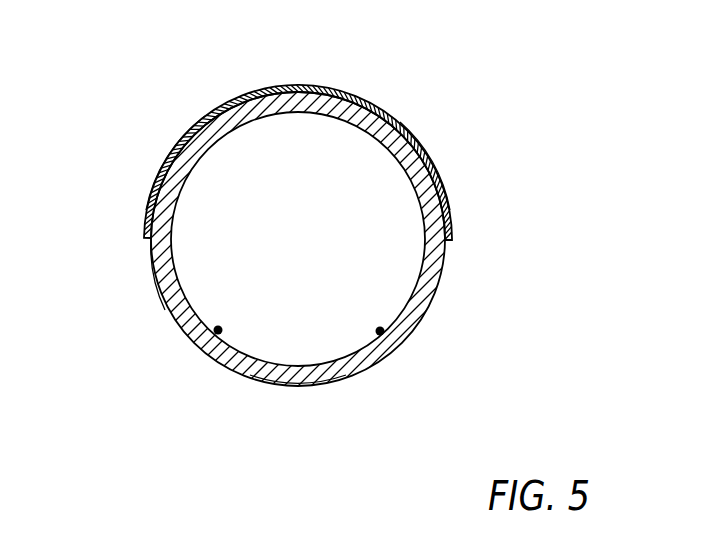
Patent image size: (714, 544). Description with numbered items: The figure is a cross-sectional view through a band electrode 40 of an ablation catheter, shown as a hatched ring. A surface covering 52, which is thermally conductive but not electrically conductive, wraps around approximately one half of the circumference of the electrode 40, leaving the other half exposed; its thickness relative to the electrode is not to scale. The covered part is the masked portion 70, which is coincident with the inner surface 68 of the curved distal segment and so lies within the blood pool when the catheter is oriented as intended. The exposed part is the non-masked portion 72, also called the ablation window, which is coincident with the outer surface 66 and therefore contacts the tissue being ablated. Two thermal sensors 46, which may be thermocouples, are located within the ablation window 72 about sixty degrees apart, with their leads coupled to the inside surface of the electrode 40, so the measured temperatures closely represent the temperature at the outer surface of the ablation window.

The band electrode 40 is at (336, 101).
The thermal sensors 46 is at (217, 328).
The surface covering 52 is at (449, 203).
The outer surface 66 is at (303, 394).
The inner surface 68 is at (155, 136).
The masked portion 70 is at (459, 147).
The non-masked portion 72 is at (121, 265).